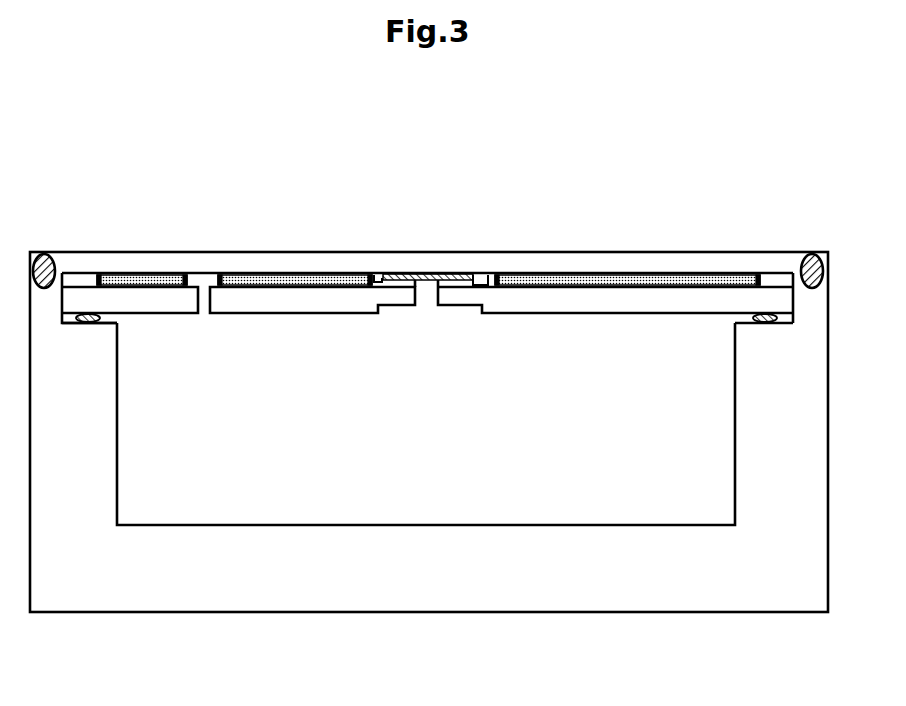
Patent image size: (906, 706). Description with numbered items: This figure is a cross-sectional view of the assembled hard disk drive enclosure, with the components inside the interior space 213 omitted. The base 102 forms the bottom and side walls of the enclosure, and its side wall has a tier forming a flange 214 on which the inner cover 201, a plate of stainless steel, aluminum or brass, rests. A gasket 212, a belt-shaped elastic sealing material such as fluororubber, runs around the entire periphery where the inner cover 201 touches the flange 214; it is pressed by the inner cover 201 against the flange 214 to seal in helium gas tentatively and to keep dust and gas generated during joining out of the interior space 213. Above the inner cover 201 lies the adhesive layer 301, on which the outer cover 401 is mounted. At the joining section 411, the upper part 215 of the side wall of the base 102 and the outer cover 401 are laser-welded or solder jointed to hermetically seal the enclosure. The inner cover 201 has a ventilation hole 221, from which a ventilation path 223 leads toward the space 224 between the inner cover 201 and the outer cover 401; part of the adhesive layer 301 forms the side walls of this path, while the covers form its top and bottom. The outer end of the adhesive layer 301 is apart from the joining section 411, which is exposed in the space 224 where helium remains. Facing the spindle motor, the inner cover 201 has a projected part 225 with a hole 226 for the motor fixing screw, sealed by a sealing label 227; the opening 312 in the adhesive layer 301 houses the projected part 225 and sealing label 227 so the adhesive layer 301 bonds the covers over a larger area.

The base 102 is at (308, 613).
The inner cover 201 is at (610, 313).
The gasket 212 is at (88, 324).
The interior space 213 is at (120, 480).
The flange 214 is at (110, 320).
The upper part of the side wall 215 is at (86, 272).
The ventilation hole 221 is at (205, 313).
The ventilation path 223 is at (210, 288).
The space 224 is at (82, 272).
The projected part 225 is at (376, 275).
The hole 226 is at (435, 282).
The sealing label 227 is at (423, 282).
The adhesive layer 301 is at (323, 275).
The opening 312 is at (478, 274).
The outer cover 401 is at (553, 252).
The joining section 411 is at (40, 253).